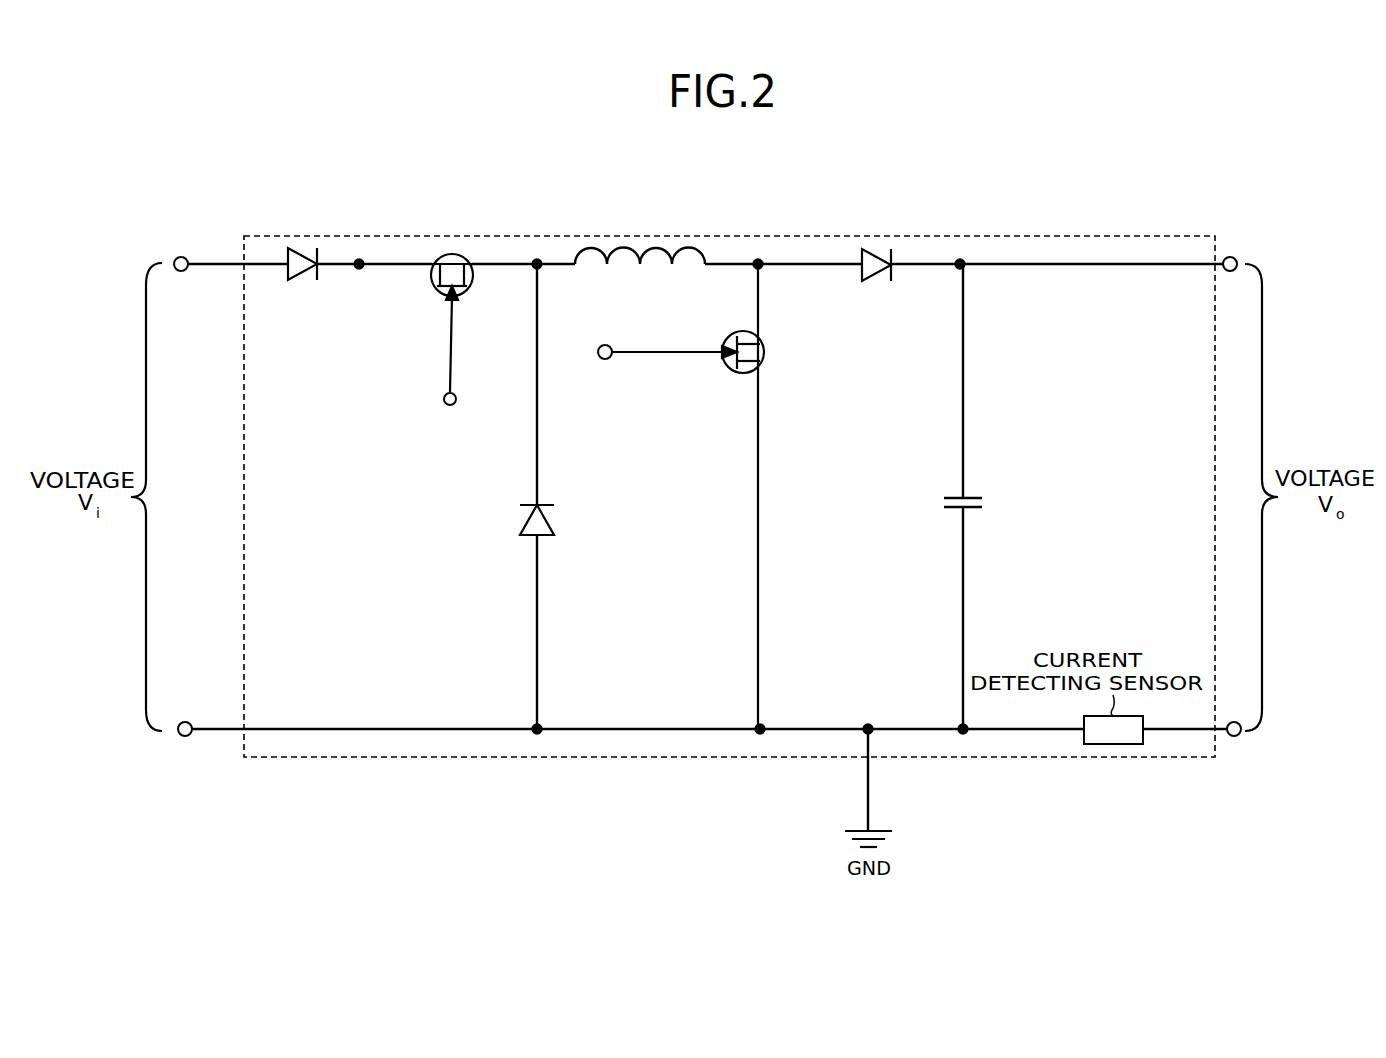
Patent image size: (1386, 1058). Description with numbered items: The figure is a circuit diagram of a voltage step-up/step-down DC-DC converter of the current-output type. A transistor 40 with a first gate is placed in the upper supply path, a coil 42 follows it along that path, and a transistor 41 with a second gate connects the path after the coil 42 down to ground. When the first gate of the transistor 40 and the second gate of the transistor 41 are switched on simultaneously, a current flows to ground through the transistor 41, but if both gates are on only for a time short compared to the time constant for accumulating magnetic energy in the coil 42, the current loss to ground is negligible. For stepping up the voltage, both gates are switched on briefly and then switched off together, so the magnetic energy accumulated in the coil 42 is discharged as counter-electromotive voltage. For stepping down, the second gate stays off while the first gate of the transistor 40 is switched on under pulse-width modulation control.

The transistor 40 is at (452, 256).
The transistor 41 is at (765, 352).
The coil 42 is at (683, 249).